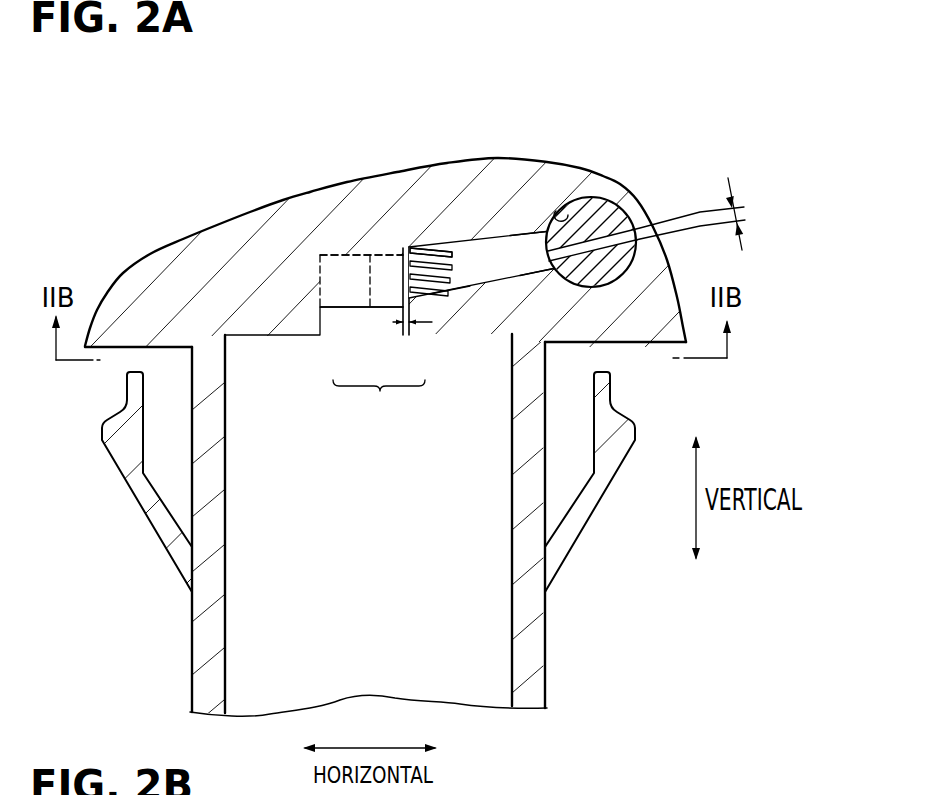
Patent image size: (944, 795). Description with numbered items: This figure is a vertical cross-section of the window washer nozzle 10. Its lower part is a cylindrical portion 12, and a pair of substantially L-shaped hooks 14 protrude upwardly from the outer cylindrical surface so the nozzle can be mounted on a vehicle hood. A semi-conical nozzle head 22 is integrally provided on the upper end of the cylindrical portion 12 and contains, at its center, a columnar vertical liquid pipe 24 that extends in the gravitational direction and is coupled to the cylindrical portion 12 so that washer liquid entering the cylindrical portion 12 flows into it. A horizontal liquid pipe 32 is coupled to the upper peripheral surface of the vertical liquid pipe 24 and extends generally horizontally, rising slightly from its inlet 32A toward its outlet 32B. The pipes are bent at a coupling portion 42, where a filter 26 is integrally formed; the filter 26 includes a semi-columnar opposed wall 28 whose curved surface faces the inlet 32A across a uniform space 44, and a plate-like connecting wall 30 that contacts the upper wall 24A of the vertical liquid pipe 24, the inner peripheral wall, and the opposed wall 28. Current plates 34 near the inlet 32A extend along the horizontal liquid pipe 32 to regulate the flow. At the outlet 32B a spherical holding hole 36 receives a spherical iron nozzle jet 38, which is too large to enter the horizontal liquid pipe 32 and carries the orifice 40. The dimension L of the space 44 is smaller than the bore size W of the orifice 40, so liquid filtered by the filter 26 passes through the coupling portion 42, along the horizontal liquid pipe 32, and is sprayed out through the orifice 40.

The window washer nozzle 10 is at (158, 99).
The cylindrical portion 12 is at (547, 638).
The hooks 14 is at (119, 468).
The nozzle head 22 is at (212, 202).
The vertical liquid pipe 24 is at (332, 320).
The upper wall of the vertical liquid pipe 24A is at (320, 254).
The filter 26 is at (372, 364).
The opposed wall 28 is at (390, 288).
The connecting wall 30 is at (353, 290).
The horizontal liquid pipe 32 is at (505, 248).
The inlet 32A is at (403, 247).
The outlet 32B is at (518, 233).
The current plates 34 is at (437, 248).
The holding hole 36 is at (556, 211).
The nozzle jet 38 is at (635, 200).
The orifice 40 is at (640, 228).
The coupling portion 42 is at (447, 292).
The space 44 is at (400, 275).
The dimension of the space L is at (410, 325).
The bore size of the orifice W is at (744, 208).